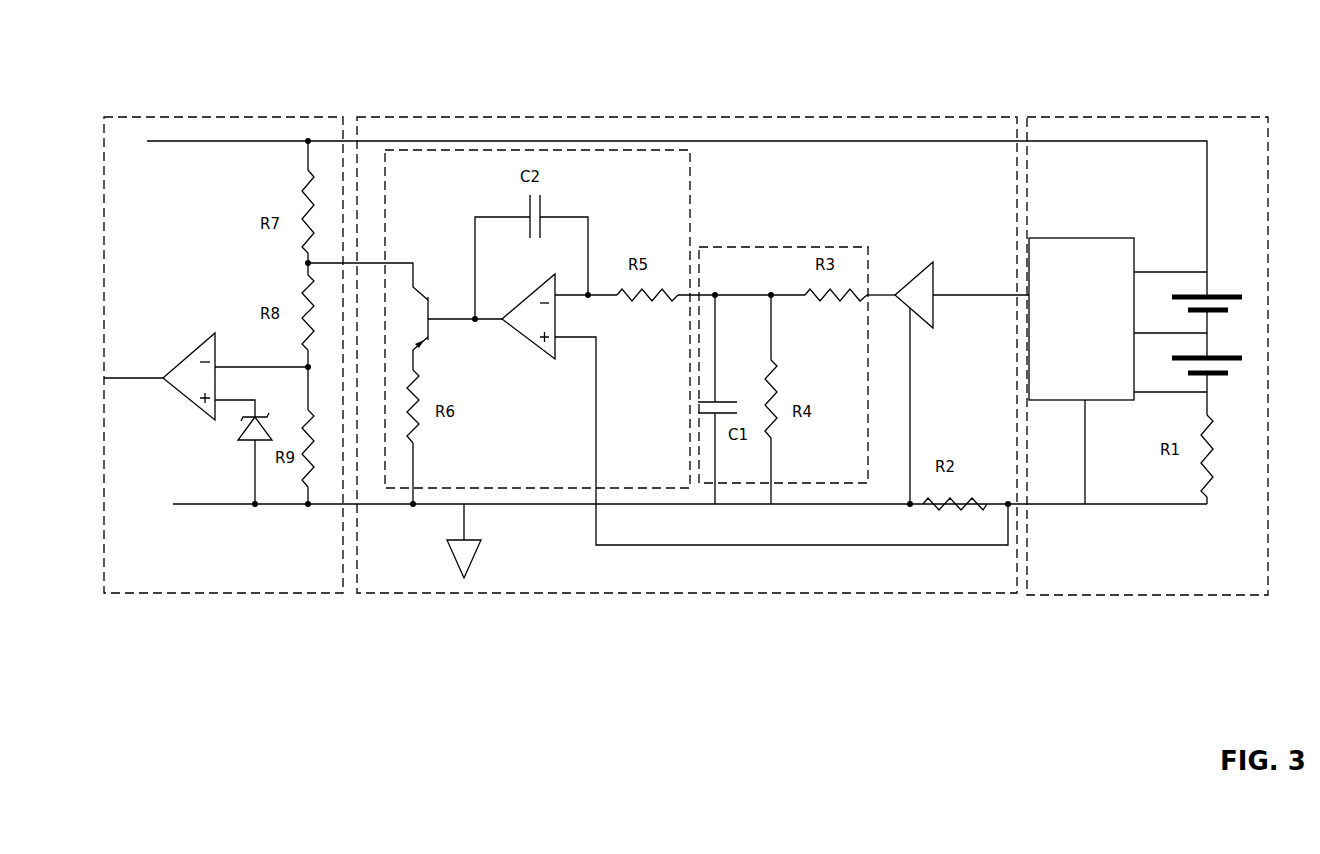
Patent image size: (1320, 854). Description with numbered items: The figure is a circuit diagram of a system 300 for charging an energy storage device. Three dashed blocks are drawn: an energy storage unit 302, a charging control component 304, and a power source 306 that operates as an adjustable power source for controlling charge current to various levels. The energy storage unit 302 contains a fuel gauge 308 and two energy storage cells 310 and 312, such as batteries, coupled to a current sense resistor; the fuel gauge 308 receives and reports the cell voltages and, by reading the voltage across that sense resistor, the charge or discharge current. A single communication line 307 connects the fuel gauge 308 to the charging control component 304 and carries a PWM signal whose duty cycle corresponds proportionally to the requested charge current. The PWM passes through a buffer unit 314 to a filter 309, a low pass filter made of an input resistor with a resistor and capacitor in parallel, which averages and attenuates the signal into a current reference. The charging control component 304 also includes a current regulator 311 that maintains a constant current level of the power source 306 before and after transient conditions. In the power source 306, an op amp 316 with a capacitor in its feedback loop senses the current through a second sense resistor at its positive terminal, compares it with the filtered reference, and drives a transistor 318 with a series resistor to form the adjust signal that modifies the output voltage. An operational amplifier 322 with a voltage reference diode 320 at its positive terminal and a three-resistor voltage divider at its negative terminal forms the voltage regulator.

The system 300 is at (490, 48).
The energy storage unit 302 is at (1108, 117).
The charging control component 304 is at (755, 117).
The power source 306 is at (240, 117).
The communication line 307 is at (958, 259).
The fuel gauge 308 is at (1082, 237).
The filter 309 is at (723, 247).
The energy storage cell 310 is at (1253, 294).
The current regulator 311 is at (690, 200).
The energy storage cell 312 is at (1256, 347).
The buffer unit 314 is at (922, 328).
The op amp 316 is at (555, 358).
The transistor 318 is at (436, 249).
The voltage reference diode 320 is at (240, 440).
The operational amplifier 322 is at (195, 345).